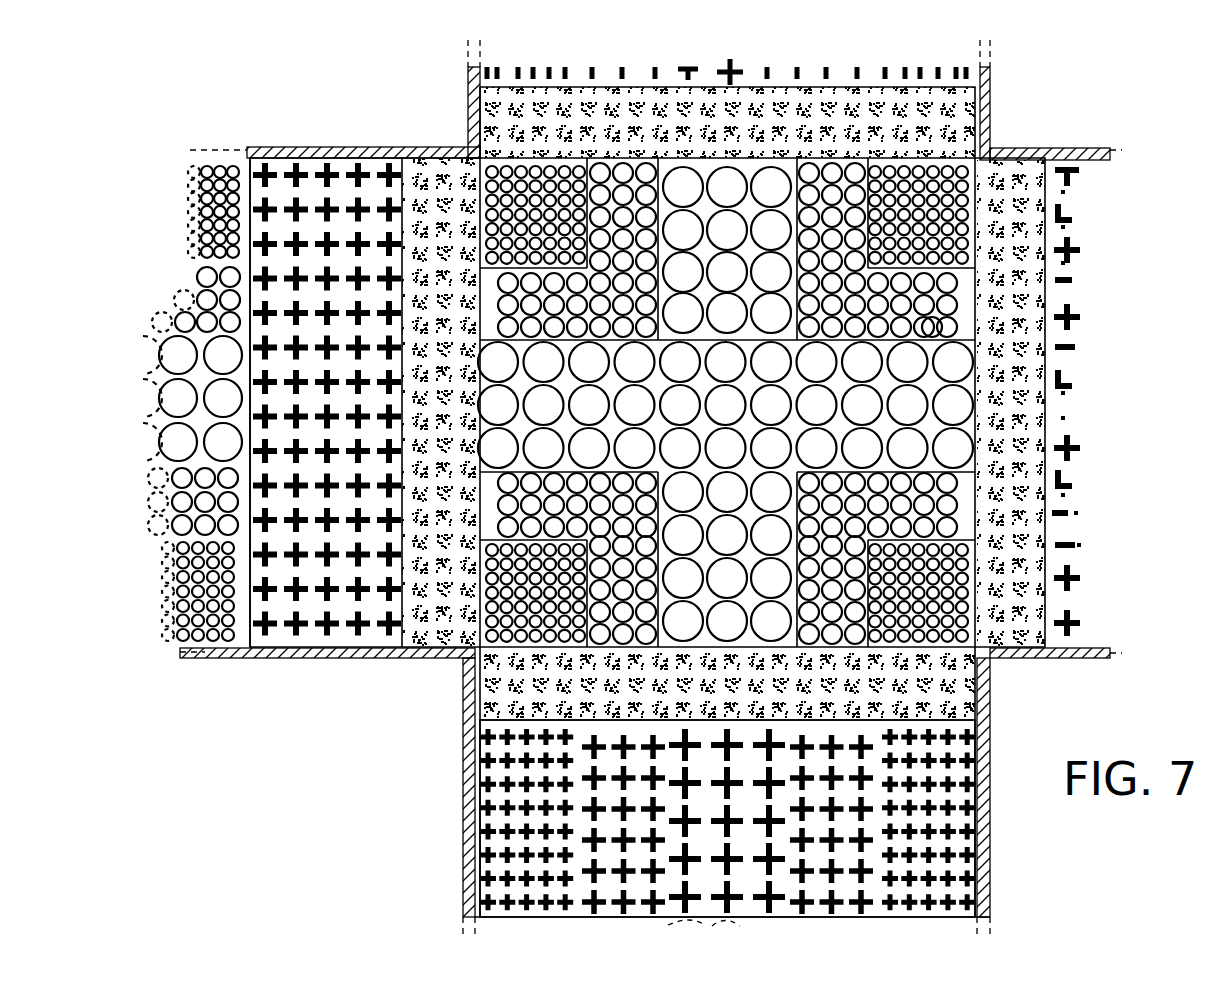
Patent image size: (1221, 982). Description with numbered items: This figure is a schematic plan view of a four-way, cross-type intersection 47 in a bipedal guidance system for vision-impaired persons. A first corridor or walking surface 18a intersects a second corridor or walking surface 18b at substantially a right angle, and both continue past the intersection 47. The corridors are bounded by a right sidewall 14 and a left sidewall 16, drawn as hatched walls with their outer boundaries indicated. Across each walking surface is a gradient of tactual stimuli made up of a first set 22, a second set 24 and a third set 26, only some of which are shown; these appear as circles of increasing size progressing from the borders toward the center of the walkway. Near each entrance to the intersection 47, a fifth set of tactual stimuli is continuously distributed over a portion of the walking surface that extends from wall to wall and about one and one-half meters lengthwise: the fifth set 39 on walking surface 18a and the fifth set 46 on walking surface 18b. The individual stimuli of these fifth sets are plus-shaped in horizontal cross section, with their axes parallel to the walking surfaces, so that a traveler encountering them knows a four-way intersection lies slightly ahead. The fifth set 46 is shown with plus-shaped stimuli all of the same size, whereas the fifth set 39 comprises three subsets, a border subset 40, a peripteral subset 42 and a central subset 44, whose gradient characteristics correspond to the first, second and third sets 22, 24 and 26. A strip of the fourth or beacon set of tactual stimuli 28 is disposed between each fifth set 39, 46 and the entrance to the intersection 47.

The right sidewall 14 is at (992, 90).
The left sidewall 16 is at (283, 147).
The first corridor or walking surface 18a is at (920, 818).
The second corridor or walking surface 18b is at (176, 616).
The first set of tactual stimuli 22 is at (962, 176).
The second set of tactual stimuli 24 is at (958, 326).
The third set of tactual stimuli 26 is at (960, 402).
The fourth or beacon set of tactual stimuli 28 is at (437, 157).
The fifth set of tactual stimuli 39 is at (950, 740).
The border subset 40 is at (487, 858).
The peripteral subset 42 is at (378, 607).
The central subset 44 is at (730, 867).
The fifth set of tactual stimuli 46 is at (337, 245).
The intersection 47 is at (930, 315).